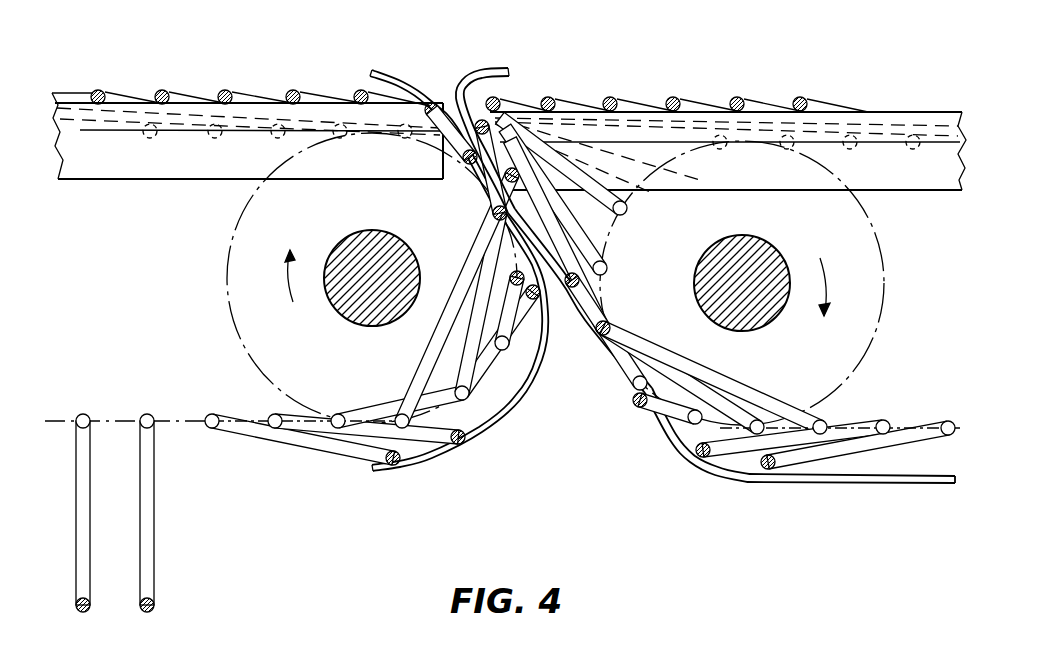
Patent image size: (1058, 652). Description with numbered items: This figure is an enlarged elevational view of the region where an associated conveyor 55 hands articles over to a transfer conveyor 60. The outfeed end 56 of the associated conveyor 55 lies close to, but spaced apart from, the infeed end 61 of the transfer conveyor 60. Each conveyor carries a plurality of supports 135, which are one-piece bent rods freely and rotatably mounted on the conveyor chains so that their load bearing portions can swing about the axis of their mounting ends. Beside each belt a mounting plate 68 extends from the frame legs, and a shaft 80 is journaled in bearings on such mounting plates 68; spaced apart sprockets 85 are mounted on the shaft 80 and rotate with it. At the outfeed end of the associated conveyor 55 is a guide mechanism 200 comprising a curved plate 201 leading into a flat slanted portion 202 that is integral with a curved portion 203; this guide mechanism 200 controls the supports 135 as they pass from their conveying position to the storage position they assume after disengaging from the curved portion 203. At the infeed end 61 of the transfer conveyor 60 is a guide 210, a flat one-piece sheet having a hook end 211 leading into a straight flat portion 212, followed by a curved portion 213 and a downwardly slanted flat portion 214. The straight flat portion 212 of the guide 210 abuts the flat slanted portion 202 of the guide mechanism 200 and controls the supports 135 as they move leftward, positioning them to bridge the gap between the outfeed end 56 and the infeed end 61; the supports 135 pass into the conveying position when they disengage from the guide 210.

The associated conveyor 55 is at (509, 133).
The outfeed end 56 is at (196, 80).
The supports 135 is at (247, 93).
The mounting plates 68 is at (192, 163).
The transfer conveyor 60 is at (717, 71).
The infeed end 61 is at (734, 72).
The shaft 80 is at (356, 318).
The sprockets 85 is at (255, 360).
The guide mechanism 200 is at (463, 240).
The curved plate 201 is at (407, 82).
The flat slanted portion 202 is at (493, 193).
The curved portion 203 is at (530, 385).
The guide 210 is at (705, 296).
The hook end 211 is at (497, 64).
The straight flat portion 212 is at (583, 333).
The curved guide section 213 is at (680, 457).
The downwardly slanted flat portion 214 is at (858, 478).